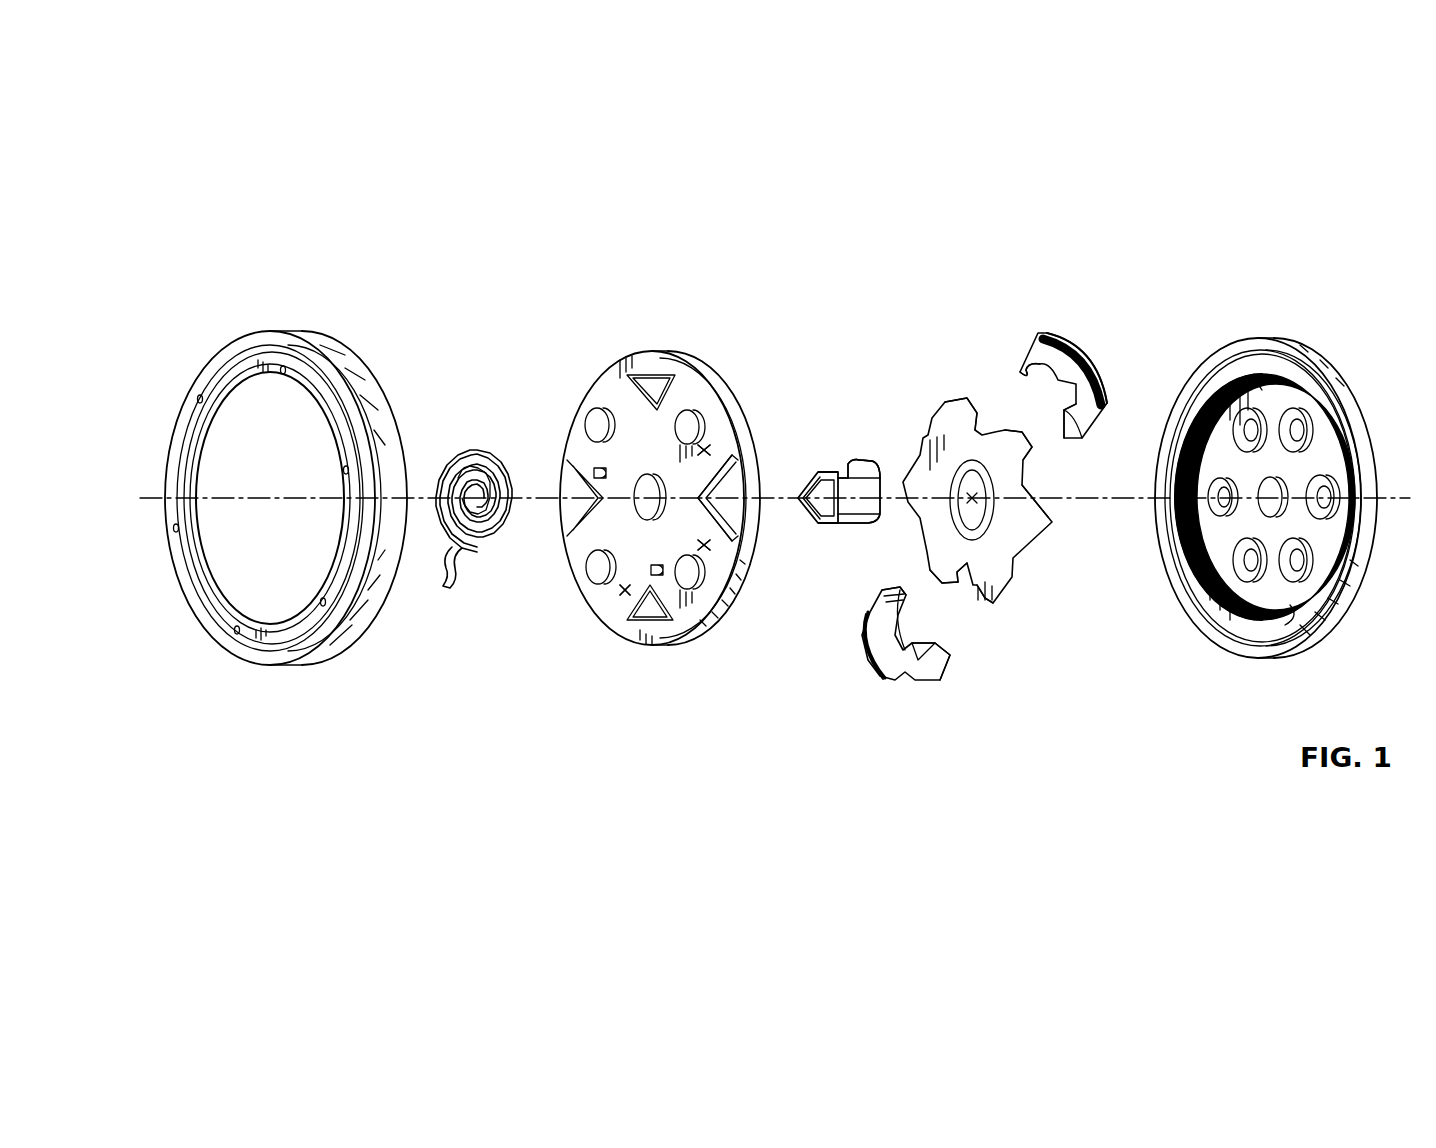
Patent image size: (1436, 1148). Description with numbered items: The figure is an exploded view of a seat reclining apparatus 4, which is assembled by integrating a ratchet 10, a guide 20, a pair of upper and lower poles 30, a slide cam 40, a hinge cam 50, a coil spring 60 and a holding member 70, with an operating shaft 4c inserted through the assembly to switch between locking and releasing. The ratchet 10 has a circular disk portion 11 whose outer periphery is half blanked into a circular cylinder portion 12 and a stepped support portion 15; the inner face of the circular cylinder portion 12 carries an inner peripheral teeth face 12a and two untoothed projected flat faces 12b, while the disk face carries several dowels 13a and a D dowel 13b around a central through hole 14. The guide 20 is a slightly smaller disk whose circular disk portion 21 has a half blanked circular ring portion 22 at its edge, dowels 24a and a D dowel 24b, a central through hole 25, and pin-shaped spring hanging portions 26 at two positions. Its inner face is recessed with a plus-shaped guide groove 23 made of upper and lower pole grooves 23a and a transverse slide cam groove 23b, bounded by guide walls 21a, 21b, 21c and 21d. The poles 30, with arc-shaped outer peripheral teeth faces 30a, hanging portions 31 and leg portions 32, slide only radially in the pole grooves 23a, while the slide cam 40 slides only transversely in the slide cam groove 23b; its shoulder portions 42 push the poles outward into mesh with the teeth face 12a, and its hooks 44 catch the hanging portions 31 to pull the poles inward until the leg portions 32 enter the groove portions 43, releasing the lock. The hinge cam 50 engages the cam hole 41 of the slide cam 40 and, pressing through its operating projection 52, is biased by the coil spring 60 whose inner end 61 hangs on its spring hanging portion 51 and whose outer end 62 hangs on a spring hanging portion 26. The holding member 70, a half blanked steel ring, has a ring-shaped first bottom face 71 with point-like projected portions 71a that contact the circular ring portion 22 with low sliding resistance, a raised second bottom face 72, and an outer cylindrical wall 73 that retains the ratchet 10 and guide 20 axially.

The reclining apparatus 4 is at (1161, 238).
The ratchet 10 is at (1334, 387).
The circular disk portion 11 is at (1308, 455).
The circular cylinder portion 12 is at (1185, 435).
The inner peripheral teeth face 12a is at (1215, 395).
The projected flat face 12b is at (1235, 375).
The dowel 13a is at (1297, 415).
The D dowel 13b is at (1185, 540).
The through hole 14 is at (1275, 480).
The support portion 15 is at (1200, 620).
The guide 20 is at (690, 365).
The circular disk portion 21 is at (718, 496).
The guide wall 21a is at (660, 377).
The guide wall 21b is at (738, 505).
The guide wall 21c is at (587, 495).
The guide wall 21d is at (655, 613).
The circular ring portion 22 is at (690, 598).
The guide groove 23 is at (665, 520).
The pole groove 23a is at (705, 450).
The slide cam groove 23b is at (705, 545).
The dowel 24a is at (596, 423).
The D dowel 24b is at (597, 572).
The through hole 25 is at (648, 490).
The spring hanging portion 26 is at (657, 570).
The pole 30 is at (1034, 337).
The outer peripheral teeth face 30a is at (1078, 350).
The hanging portion 31 is at (1075, 428).
The leg portion 32 is at (1068, 410).
The slide cam 40 is at (950, 400).
The cam hole 41 is at (1013, 518).
The shoulder portion 42 is at (1015, 500).
The groove portion 43 is at (1013, 478).
The hook 44 is at (1018, 450).
The hinge cam 50 is at (848, 520).
The operating shaft 4c is at (859, 492).
The spring hanging portion 51 is at (818, 520).
The operating projection 52 is at (855, 462).
The coil spring 60 is at (474, 431).
The inner end 61 is at (497, 545).
The outer end 62 is at (462, 590).
The holding member 70 is at (318, 338).
The first bottom face 71 is at (200, 600).
The projected portion 71a is at (283, 374).
The second bottom face 72 is at (345, 385).
The side wall 73 is at (383, 420).